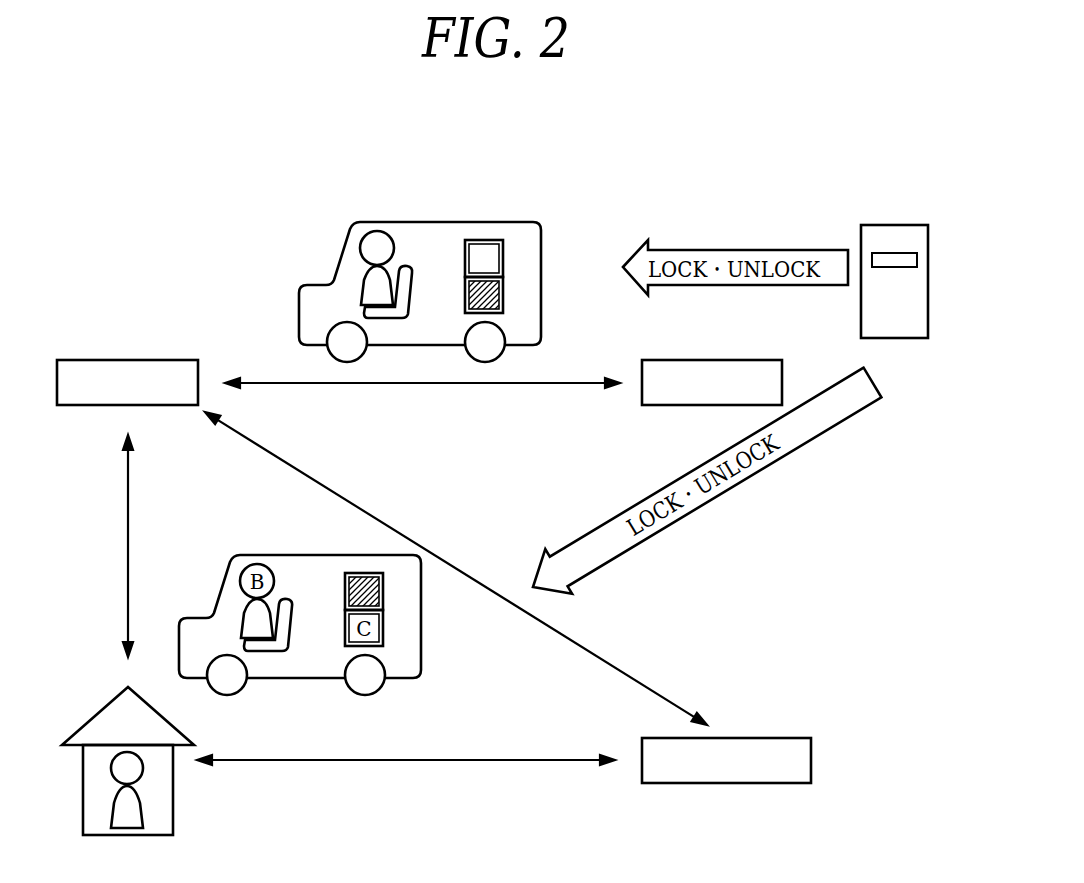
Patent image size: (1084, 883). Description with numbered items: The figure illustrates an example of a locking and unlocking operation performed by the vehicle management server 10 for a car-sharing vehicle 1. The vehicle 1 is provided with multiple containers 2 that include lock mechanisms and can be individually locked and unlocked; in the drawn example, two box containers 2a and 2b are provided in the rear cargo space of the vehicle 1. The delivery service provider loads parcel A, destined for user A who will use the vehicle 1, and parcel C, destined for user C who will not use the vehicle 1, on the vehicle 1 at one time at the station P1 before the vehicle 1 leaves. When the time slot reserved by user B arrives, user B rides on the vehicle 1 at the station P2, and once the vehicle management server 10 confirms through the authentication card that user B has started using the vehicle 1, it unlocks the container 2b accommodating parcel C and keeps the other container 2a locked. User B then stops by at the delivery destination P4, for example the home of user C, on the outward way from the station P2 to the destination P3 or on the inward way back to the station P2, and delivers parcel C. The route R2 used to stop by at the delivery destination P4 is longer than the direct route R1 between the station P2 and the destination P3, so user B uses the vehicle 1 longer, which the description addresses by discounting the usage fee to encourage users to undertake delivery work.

The vehicle 1 is at (519, 222).
The containers 2 is at (540, 276).
The container 2a is at (503, 258).
The container 2b is at (503, 292).
The vehicle management server 10 is at (900, 225).
The station P1 is at (747, 359).
The station P2 is at (152, 359).
The destination P3 is at (763, 737).
The delivery destination P4 is at (113, 697).
The direct route R1 is at (456, 568).
The route R2 is at (352, 618).